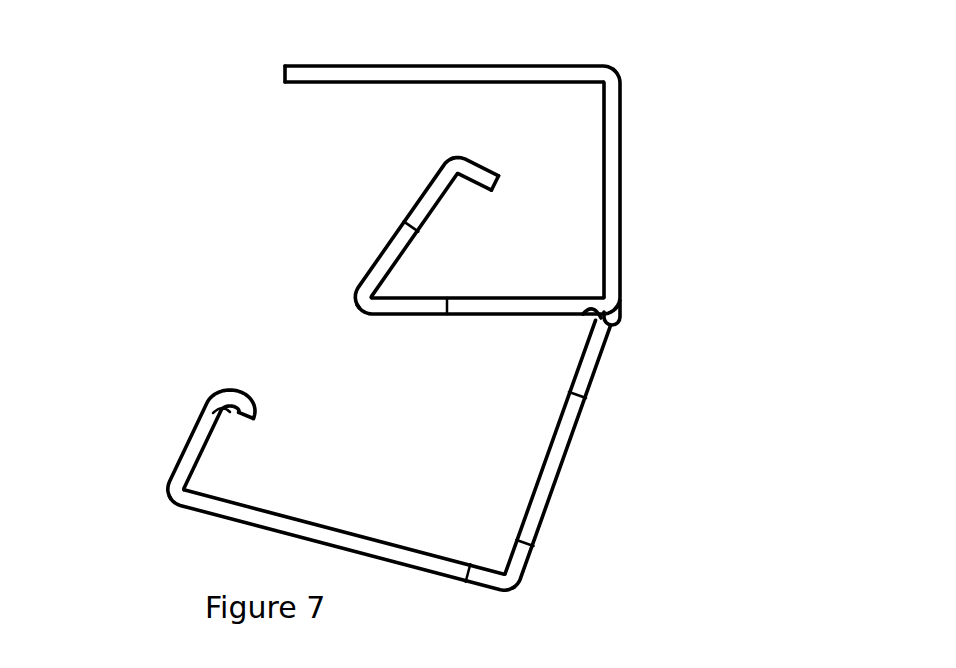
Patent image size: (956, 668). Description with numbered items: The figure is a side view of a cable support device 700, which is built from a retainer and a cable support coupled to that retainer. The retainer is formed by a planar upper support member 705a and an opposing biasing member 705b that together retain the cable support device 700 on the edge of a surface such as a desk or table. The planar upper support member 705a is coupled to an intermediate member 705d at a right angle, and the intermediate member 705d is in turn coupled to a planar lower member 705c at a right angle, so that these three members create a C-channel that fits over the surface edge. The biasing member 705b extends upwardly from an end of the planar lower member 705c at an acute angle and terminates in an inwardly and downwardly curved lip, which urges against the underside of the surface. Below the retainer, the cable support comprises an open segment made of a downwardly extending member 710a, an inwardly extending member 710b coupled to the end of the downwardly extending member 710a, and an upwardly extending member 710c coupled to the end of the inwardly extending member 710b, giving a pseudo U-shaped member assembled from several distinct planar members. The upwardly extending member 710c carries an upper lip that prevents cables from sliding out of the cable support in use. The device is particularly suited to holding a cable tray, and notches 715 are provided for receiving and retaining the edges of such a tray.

The cable support device 700 is at (195, 183).
The planar upper support member 705a is at (480, 63).
The biasing member 705b is at (386, 206).
The planar lower member 705c is at (492, 292).
The intermediate member 705d is at (625, 180).
The downwardly extending member 710a is at (566, 460).
The inwardly extending member 710b is at (356, 531).
The upwardly extending member 710c is at (172, 428).
The notches 715 is at (588, 323).